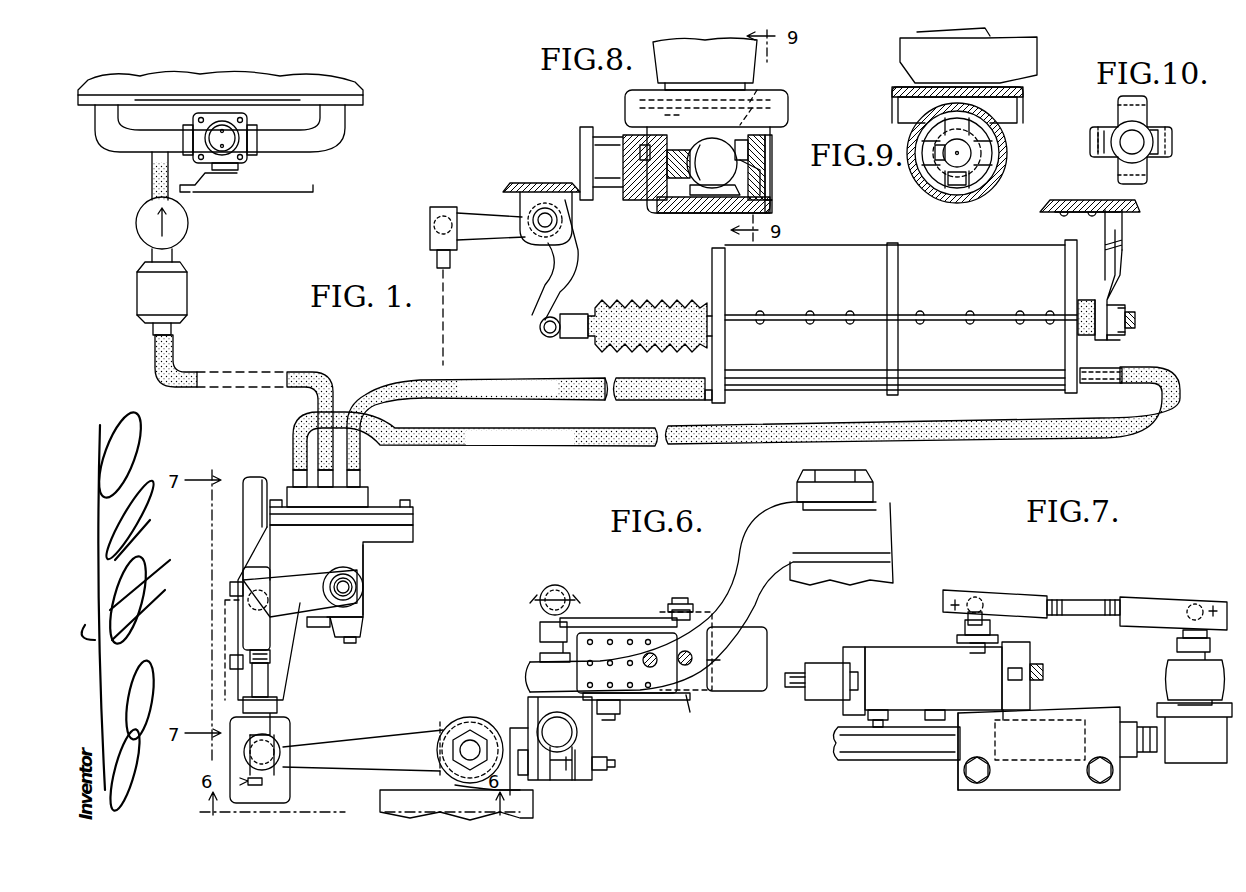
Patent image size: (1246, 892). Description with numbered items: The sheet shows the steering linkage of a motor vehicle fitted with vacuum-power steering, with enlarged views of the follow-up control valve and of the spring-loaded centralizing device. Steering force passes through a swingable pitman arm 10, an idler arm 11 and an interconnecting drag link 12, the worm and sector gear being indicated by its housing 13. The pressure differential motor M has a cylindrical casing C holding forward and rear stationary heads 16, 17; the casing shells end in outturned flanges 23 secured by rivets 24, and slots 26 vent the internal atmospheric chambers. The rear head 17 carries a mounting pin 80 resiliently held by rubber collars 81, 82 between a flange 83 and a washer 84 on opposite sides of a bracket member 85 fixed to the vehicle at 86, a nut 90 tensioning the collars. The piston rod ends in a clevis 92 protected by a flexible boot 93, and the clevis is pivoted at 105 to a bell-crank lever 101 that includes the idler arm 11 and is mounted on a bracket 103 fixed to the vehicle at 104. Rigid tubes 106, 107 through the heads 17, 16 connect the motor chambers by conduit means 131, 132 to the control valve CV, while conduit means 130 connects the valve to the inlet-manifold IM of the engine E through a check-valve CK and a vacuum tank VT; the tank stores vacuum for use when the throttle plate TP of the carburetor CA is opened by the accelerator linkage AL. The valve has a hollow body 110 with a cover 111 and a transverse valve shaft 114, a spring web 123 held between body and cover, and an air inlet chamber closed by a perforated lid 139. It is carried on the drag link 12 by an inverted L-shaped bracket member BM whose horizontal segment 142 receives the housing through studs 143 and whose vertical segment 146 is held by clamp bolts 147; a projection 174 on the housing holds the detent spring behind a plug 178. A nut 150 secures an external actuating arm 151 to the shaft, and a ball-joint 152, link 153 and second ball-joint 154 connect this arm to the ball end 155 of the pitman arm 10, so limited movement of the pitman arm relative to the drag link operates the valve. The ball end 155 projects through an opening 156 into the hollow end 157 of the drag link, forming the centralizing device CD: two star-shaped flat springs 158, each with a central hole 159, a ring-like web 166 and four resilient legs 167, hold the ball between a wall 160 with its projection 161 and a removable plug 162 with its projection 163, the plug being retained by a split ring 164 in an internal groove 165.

In FIG. 1, the engine E is at (287, 78).
In FIG. 1, the inlet-manifold IM is at (327, 135).
In FIG. 1, the throttle plate TP is at (234, 135).
In FIG. 1, the carburetor CA is at (240, 150).
In FIG. 1, the accelerator linkage AL is at (312, 192).
In FIG. 1, the check-valve CK is at (162, 207).
In FIG. 1, the vacuum accumulator or tank VT is at (162, 298).
In FIG. 1, the pressure differential motor M is at (918, 269).
In FIG. 1, the cylindrical casing C is at (843, 258).
In FIG. 1, the control valve CV is at (379, 563).
In FIG. 6, the control valve CV is at (708, 698).
In FIG. 7, the control valve CV is at (1040, 639).
In FIG. 1, the bracket member BM is at (283, 631).
In FIG. 6, the bracket member BM is at (546, 772).
In FIG. 7, the bracket member BM is at (1057, 748).
In FIG. 8, the centralizing mechanism or device CD is at (775, 125).
In FIG. 9, the centralizing mechanism or device CD is at (1015, 162).
In FIG. 7, the centralizing mechanism or device CD is at (1224, 770).
In FIG. 1, the pitman arm 10 is at (416, 739).
In FIG. 8, the pitman arm 10 is at (655, 66).
In FIG. 9, the pitman arm 10 is at (1025, 50).
In FIG. 6, the pitman arm 10 is at (723, 590).
In FIG. 7, the pitman arm 10 is at (1175, 674).
In FIG. 1, the idler arm 11 is at (500, 217).
In FIG. 1, the drag link 12 is at (253, 478).
In FIG. 8, the drag link 12 is at (610, 140).
In FIG. 6, the drag link 12 is at (580, 768).
In FIG. 7, the drag link 12 is at (925, 750).
In FIG. 1, the housing 13 is at (450, 725).
In FIG. 6, the housing 13 is at (888, 568).
In FIG. 1, the forward stationary head 16 is at (712, 271).
In FIG. 1, the rear stationary head 17 is at (1078, 352).
In FIG. 1, the outturned flanges 23 is at (785, 307).
In FIG. 1, the rivets 24 is at (876, 323).
In FIG. 1, the openings or slots 26 is at (735, 392).
In FIG. 1, the mounting pin 80 is at (1137, 316).
In FIG. 1, the rubber collar 81 is at (1085, 298).
In FIG. 1, the rubber collar 82 is at (1112, 338).
In FIG. 1, the flange 83 is at (1110, 288).
In FIG. 1, the washer 84 is at (1122, 328).
In FIG. 1, the bracket member 85 is at (1126, 212).
In FIG. 1, the fixed portion on the vehicle 86 is at (1044, 219).
In FIG. 1, the nut 90 is at (1134, 310).
In FIG. 1, the clevis 92 is at (572, 338).
In FIG. 1, the flexible protecting boot 93 is at (640, 300).
In FIG. 1, the bell-crank lever 101 is at (552, 280).
In FIG. 1, the bracket 103 is at (563, 212).
In FIG. 1, the fixed portion on the vehicle 104 is at (530, 183).
In FIG. 1, the pivotal connection 105 is at (540, 327).
In FIG. 1, the rigid tube 106 is at (1082, 384).
In FIG. 1, the rigid tube 107 is at (708, 397).
In FIG. 1, the valve body or housing 110 is at (350, 560).
In FIG. 6, the valve body or housing 110 is at (742, 630).
In FIG. 7, the valve body or housing 110 is at (933, 678).
In FIG. 1, the cover 111 is at (370, 500).
In FIG. 7, the cover 111 is at (840, 663).
In FIG. 1, the valve shaft 114 is at (350, 588).
In FIG. 6, the valve shaft 114 is at (682, 598).
In FIG. 7, the valve shaft 114 is at (943, 609).
In FIG. 1, the rectangular frame or web 123 is at (414, 519).
In FIG. 7, the rectangular frame or web 123 is at (858, 648).
In FIG. 1, the conduit means 130 is at (300, 373).
In FIG. 1, the conduit means 131 is at (300, 432).
In FIG. 1, the conduit means 132 is at (412, 380).
In FIG. 1, the perforated lid 139 is at (320, 627).
In FIG. 6, the perforated lid 139 is at (600, 640).
In FIG. 7, the perforated lid 139 is at (1005, 650).
In FIG. 1, the horizontal segment 142 is at (278, 692).
In FIG. 6, the horizontal segment 142 is at (620, 699).
In FIG. 7, the horizontal segment 142 is at (868, 717).
In FIG. 6, the studs 143 is at (618, 717).
In FIG. 7, the studs 143 is at (873, 725).
In FIG. 1, the vertical segment 146 is at (232, 657).
In FIG. 6, the vertical segment 146 is at (530, 735).
In FIG. 7, the vertical segment 146 is at (962, 767).
In FIG. 1, the clamp bolts 147 is at (232, 587).
In FIG. 6, the clamp bolts 147 is at (605, 771).
In FIG. 7, the clamp bolts 147 is at (1100, 785).
In FIG. 1, the nut 150 is at (350, 598).
In FIG. 6, the nut 150 is at (675, 612).
In FIG. 7, the nut 150 is at (975, 653).
In FIG. 1, the external actuating arm 151 is at (303, 584).
In FIG. 6, the external actuating arm 151 is at (636, 618).
In FIG. 7, the external actuating arm 151 is at (957, 638).
In FIG. 1, the ball-joint 152 is at (246, 617).
In FIG. 7, the ball-joint 152 is at (997, 585).
In FIG. 1, the link 153 is at (270, 660).
In FIG. 7, the link 153 is at (1070, 600).
In FIG. 1, the ball-joint 154 is at (276, 776).
In FIG. 6, the ball-joint 154 is at (560, 594).
In FIG. 7, the ball-joint 154 is at (1183, 633).
In FIG. 1, the ball end 155 is at (275, 745).
In FIG. 8, the ball end 155 is at (712, 163).
In FIG. 9, the ball end 155 is at (945, 160).
In FIG. 8, the opening 156 is at (757, 94).
In FIG. 1, the hollow or chambered end 157 is at (283, 795).
In FIG. 8, the hollow or chambered end 157 is at (660, 200).
In FIG. 8, the star-shaped flat springs 158 is at (688, 205).
In FIG. 9, the star-shaped flat springs 158 is at (988, 140).
In FIG. 10, the star-shaped flat springs 158 is at (1148, 128).
In FIG. 8, the central hole 159 is at (758, 131).
In FIG. 9, the central hole 159 is at (963, 168).
In FIG. 10, the central hole 159 is at (1125, 135).
In FIG. 8, the wall 160 is at (640, 200).
In FIG. 8, the coaxial projection 161 is at (636, 190).
In FIG. 8, the removable plug 162 is at (773, 168).
In FIG. 6, the removable plug 162 is at (577, 733).
In FIG. 8, the coaxial projection 163 is at (767, 150).
In FIG. 8, the split retaining ring 164 is at (770, 185).
In FIG. 6, the split retaining ring 164 is at (578, 746).
In FIG. 8, the internal groove 165 is at (770, 203).
In FIG. 9, the central ring-like segment or web 166 is at (940, 170).
In FIG. 10, the central ring-like segment or web 166 is at (1148, 154).
In FIG. 8, the resilient legs 167 is at (725, 208).
In FIG. 9, the resilient legs 167 is at (957, 188).
In FIG. 10, the resilient legs 167 is at (1165, 144).
In FIG. 1, the projection 174 is at (365, 622).
In FIG. 6, the projection 174 is at (685, 715).
In FIG. 7, the projection 174 is at (1016, 727).
In FIG. 1, the plug 178 is at (358, 640).
In FIG. 6, the plug 178 is at (712, 668).
In FIG. 7, the plug 178 is at (1040, 682).